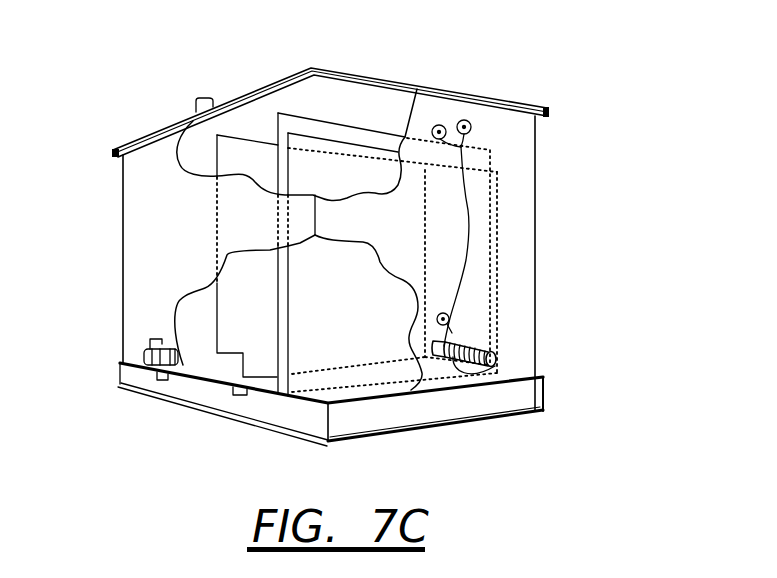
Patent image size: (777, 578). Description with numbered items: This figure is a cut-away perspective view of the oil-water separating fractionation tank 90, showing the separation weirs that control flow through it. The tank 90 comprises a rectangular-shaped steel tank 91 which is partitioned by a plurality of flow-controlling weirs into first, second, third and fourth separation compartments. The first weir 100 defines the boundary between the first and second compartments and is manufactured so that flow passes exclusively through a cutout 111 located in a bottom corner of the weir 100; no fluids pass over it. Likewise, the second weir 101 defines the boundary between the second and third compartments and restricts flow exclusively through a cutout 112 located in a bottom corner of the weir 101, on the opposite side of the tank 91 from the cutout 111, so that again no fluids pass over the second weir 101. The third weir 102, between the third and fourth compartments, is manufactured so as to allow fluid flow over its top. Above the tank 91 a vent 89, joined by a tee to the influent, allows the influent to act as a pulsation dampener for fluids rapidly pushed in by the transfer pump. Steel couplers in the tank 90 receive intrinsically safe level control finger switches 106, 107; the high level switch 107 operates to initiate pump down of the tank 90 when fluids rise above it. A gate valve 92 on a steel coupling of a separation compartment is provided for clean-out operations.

The vent 89 is at (194, 103).
The oil-water separating fractionation tank 90 is at (600, 160).
The rectangular-shaped steel tank 91 is at (179, 241).
The gate valve 92 is at (150, 367).
The first weir 100 is at (272, 327).
The second weir 101 is at (333, 130).
The third weir 102 is at (356, 313).
The level control finger switch 106 is at (468, 121).
The high level switch 107 is at (440, 124).
The cutout 111 is at (233, 369).
The cutout 112 is at (473, 337).